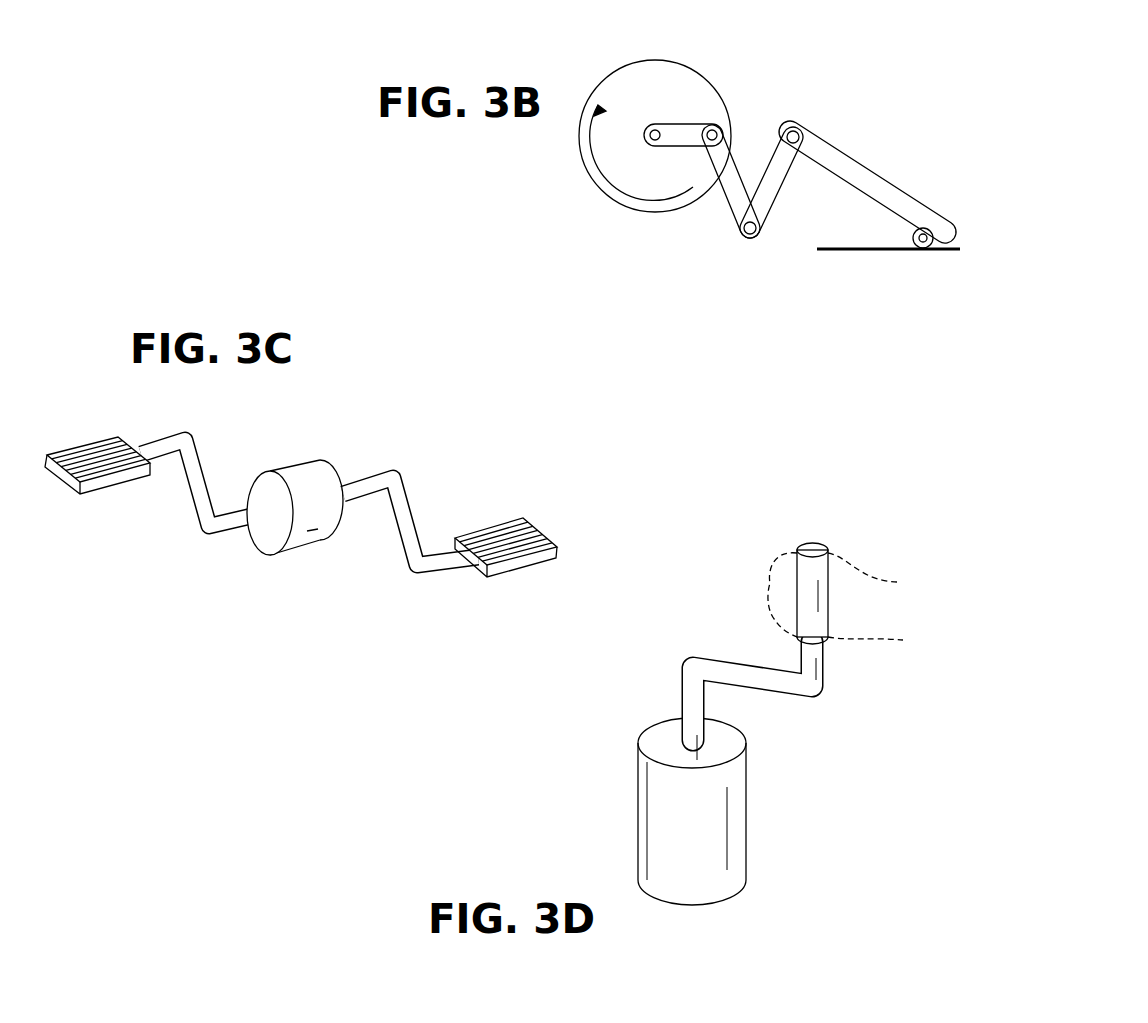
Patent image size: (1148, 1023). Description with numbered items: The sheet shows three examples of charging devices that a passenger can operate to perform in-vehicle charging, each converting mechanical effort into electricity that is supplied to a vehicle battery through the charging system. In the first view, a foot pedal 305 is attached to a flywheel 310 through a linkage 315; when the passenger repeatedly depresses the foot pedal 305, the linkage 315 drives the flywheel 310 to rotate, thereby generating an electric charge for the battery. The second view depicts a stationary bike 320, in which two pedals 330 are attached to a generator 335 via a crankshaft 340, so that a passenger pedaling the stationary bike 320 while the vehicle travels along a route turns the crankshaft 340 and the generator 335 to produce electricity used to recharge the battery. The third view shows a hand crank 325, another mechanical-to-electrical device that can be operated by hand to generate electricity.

In FIG. 3B, the foot pedal 305 is at (787, 120).
In FIG. 3B, the flywheel 310 is at (652, 210).
In FIG. 3B, the linkage 315 is at (737, 157).
In FIG. 3C, the stationary bike 320 is at (352, 393).
In FIG. 3D, the hand crank 325 is at (787, 875).
In FIG. 3C, the pedals 330 is at (80, 443).
In FIG. 3C, the generator 335 is at (307, 551).
In FIG. 3C, the crankshaft 340 is at (207, 535).